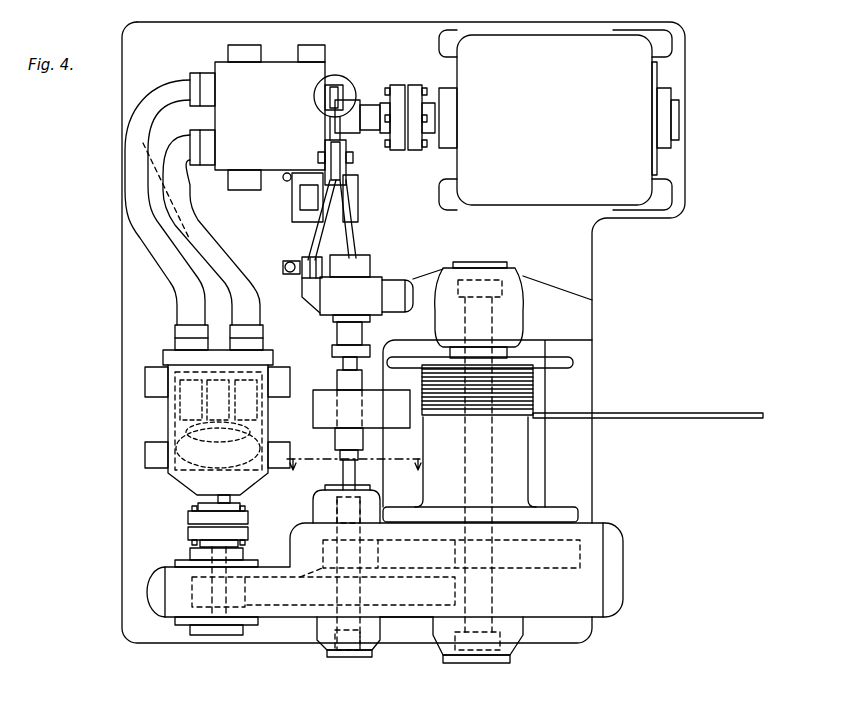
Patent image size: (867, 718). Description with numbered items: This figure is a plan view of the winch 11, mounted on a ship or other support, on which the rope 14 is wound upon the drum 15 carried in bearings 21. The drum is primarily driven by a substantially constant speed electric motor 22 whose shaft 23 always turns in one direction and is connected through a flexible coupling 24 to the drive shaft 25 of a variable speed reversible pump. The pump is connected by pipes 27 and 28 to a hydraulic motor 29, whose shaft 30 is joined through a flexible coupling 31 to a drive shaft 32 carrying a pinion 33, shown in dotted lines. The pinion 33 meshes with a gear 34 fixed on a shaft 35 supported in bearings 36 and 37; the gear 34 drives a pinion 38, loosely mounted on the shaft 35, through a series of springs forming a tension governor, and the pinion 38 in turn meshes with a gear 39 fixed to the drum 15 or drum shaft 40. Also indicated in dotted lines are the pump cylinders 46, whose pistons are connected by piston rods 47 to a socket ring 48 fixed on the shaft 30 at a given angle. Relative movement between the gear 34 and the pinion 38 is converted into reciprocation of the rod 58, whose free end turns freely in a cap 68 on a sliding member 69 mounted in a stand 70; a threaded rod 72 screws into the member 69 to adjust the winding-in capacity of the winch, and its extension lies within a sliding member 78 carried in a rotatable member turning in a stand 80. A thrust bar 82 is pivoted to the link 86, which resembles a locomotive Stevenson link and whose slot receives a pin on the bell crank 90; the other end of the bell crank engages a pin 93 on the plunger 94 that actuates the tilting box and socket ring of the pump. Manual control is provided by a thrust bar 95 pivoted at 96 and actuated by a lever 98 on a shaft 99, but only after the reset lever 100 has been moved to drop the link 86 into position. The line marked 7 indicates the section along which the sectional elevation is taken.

The section line 7 is at (354, 475).
The winch 11 is at (620, 494).
The rope 14 is at (720, 413).
The drum 15 is at (523, 470).
The bearings 21 is at (545, 657).
The motor 22 is at (645, 88).
The shaft 23 is at (440, 105).
The flexible coupling 24 is at (410, 152).
The drive shaft 25 is at (368, 104).
The pipe 27 is at (405, 152).
The pipe 28 is at (187, 237).
The hydraulic motor 29 is at (167, 400).
The shaft 30 is at (198, 504).
The flexible coupling 31 is at (188, 528).
The drive shaft 32 is at (210, 546).
The pinion 33 is at (195, 590).
The gear 34 is at (300, 625).
The shaft 35 is at (335, 650).
The bearing 36 is at (358, 657).
The bearing 37 is at (320, 503).
The pinion 38 is at (290, 545).
The gear 39 is at (600, 556).
The drum shaft 40 is at (480, 602).
The cylinders 46 is at (245, 388).
The piston rods 47 is at (240, 440).
The socket ring 48 is at (167, 467).
The rod 58 is at (343, 470).
The cap 68 is at (335, 447).
The sliding member 69 is at (337, 385).
The stand 70 is at (313, 420).
The rod 72 is at (343, 365).
The sliding member 78 is at (365, 333).
The stand 80 is at (337, 300).
The thrust bar 82 is at (352, 242).
The link 86 is at (343, 158).
The bell crank 90 is at (330, 128).
The pin 93 is at (318, 100).
The plunger 94 is at (337, 86).
The manually operated thrust bar 95 is at (312, 238).
The pivot 96 is at (302, 262).
The lever 98 is at (303, 282).
The shaft 99 is at (283, 267).
The reset lever 100 is at (283, 183).